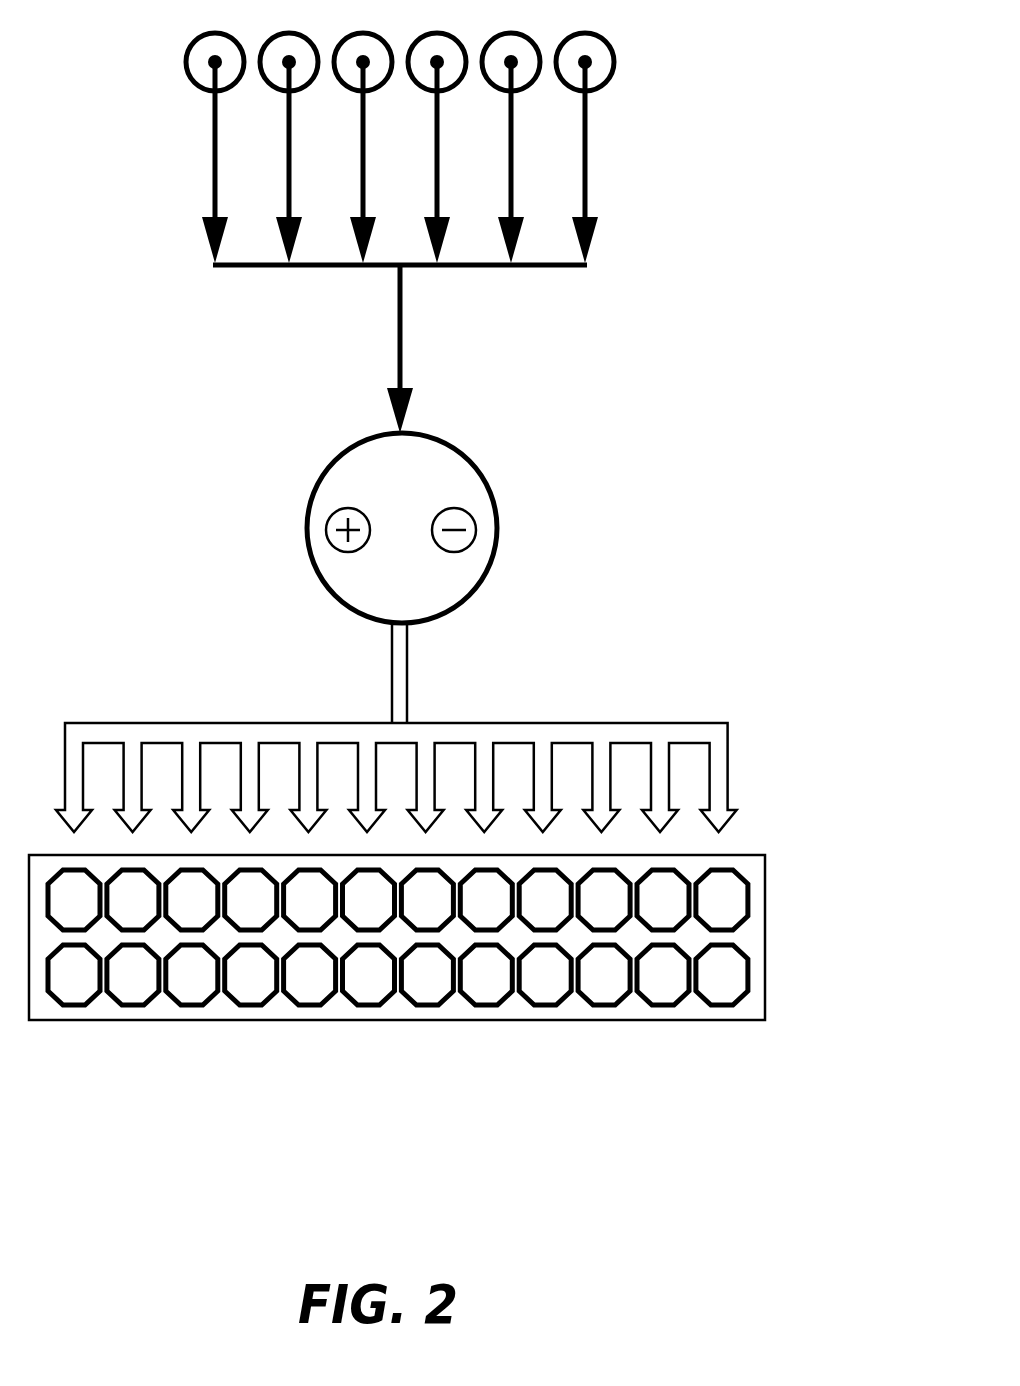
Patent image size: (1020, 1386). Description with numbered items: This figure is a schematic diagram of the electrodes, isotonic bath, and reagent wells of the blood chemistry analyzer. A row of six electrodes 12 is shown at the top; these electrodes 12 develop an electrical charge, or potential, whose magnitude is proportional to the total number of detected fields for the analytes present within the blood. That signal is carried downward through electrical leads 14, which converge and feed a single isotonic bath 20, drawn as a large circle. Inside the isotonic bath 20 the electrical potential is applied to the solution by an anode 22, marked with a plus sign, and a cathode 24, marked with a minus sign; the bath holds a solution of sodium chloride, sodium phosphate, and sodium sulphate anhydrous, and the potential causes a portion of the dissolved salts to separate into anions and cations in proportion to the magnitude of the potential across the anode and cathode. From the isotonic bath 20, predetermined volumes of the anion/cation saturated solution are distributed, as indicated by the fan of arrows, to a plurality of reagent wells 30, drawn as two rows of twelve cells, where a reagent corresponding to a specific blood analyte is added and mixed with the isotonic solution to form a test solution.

The electrodes 12 is at (613, 54).
The electrical leads 14 is at (588, 148).
The isotonic bath 20 is at (399, 528).
The anode 22 is at (347, 508).
The cathode 24 is at (462, 508).
The reagent wells 30 is at (728, 868).